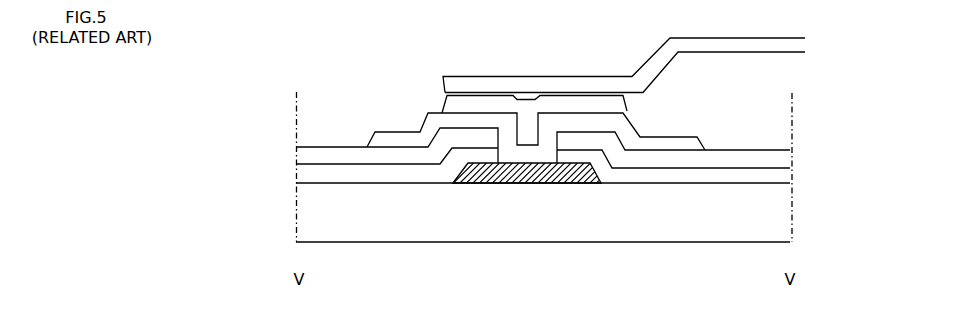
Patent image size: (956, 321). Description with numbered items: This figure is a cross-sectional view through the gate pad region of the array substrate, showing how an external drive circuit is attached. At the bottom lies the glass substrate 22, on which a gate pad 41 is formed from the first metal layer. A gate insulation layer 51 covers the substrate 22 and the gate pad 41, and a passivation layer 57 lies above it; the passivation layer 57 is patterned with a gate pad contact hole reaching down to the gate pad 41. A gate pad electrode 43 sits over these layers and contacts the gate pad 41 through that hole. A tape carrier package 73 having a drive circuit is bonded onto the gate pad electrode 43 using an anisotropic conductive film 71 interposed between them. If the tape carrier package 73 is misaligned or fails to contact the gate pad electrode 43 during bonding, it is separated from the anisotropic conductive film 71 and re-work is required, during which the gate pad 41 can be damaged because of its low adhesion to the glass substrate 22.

The substrate 22 is at (530, 223).
The gate pad 41 is at (478, 183).
The gate pad electrode 43 is at (697, 143).
The gate insulation layer 51 is at (307, 173).
The passivation layer 57 is at (305, 155).
The anisotropic conductive film 71 is at (625, 107).
The tape carrier package 73 is at (577, 77).